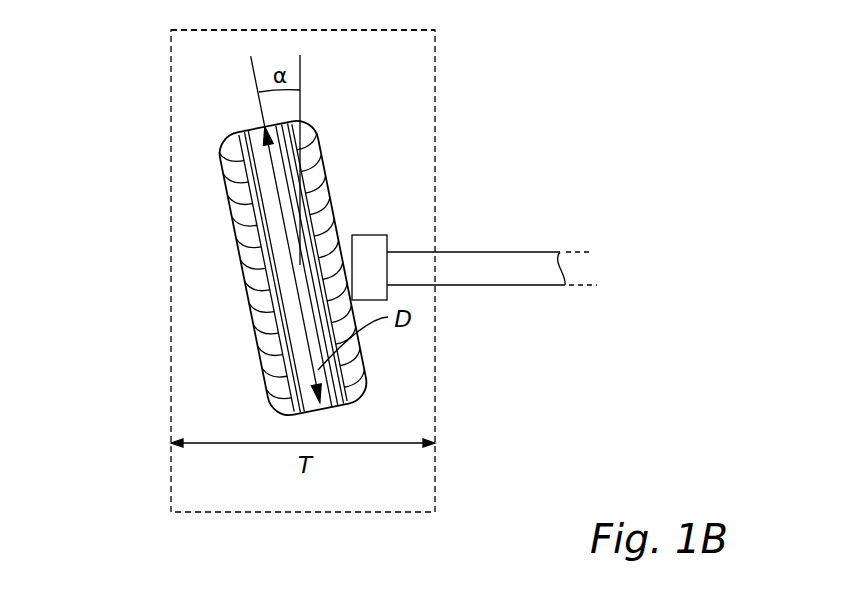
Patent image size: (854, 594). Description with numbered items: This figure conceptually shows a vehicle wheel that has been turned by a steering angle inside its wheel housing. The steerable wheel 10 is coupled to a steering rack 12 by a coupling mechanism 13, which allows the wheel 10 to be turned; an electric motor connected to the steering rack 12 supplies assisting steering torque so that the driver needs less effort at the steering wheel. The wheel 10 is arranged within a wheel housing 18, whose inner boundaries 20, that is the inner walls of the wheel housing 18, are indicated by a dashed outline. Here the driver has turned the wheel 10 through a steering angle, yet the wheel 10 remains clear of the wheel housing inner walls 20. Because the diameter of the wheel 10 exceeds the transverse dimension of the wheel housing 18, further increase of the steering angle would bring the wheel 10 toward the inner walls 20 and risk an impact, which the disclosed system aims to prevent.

The steerable wheel 10 is at (250, 297).
The steering rack 12 is at (527, 286).
The coupling mechanism 13 is at (362, 257).
The wheel housing 18 is at (205, 66).
The wheel housing inner boundaries 20 is at (165, 174).